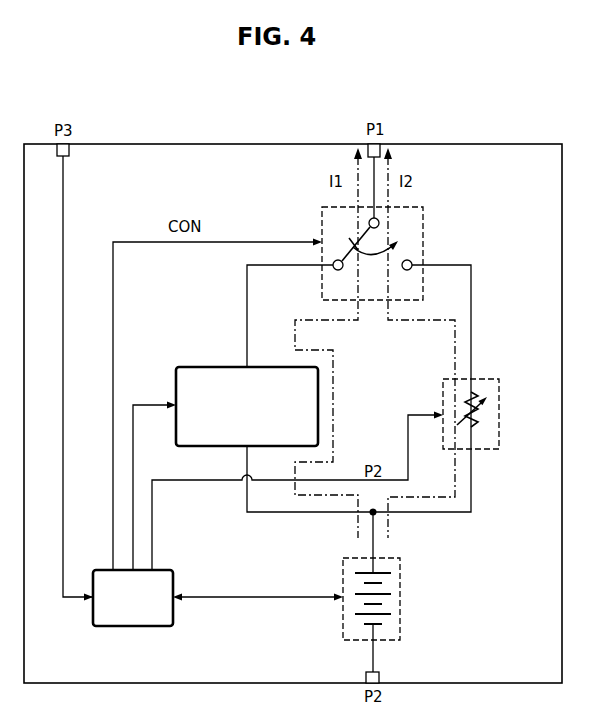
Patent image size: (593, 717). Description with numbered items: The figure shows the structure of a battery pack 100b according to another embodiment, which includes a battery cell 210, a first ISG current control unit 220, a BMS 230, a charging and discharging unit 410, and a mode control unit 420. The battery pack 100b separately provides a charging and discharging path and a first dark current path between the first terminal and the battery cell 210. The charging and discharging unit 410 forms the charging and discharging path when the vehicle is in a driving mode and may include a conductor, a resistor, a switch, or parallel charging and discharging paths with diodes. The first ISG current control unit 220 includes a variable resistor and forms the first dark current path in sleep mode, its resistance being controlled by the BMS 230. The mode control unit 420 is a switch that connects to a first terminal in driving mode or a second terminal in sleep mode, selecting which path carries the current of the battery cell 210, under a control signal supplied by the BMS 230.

The battery pack 100b is at (485, 144).
The mode control unit 420 is at (427, 225).
The charging and discharging unit 410 is at (222, 365).
The first ISG current control unit 220 is at (482, 379).
The BMS 230 is at (168, 568).
The battery cell 210 is at (402, 572).